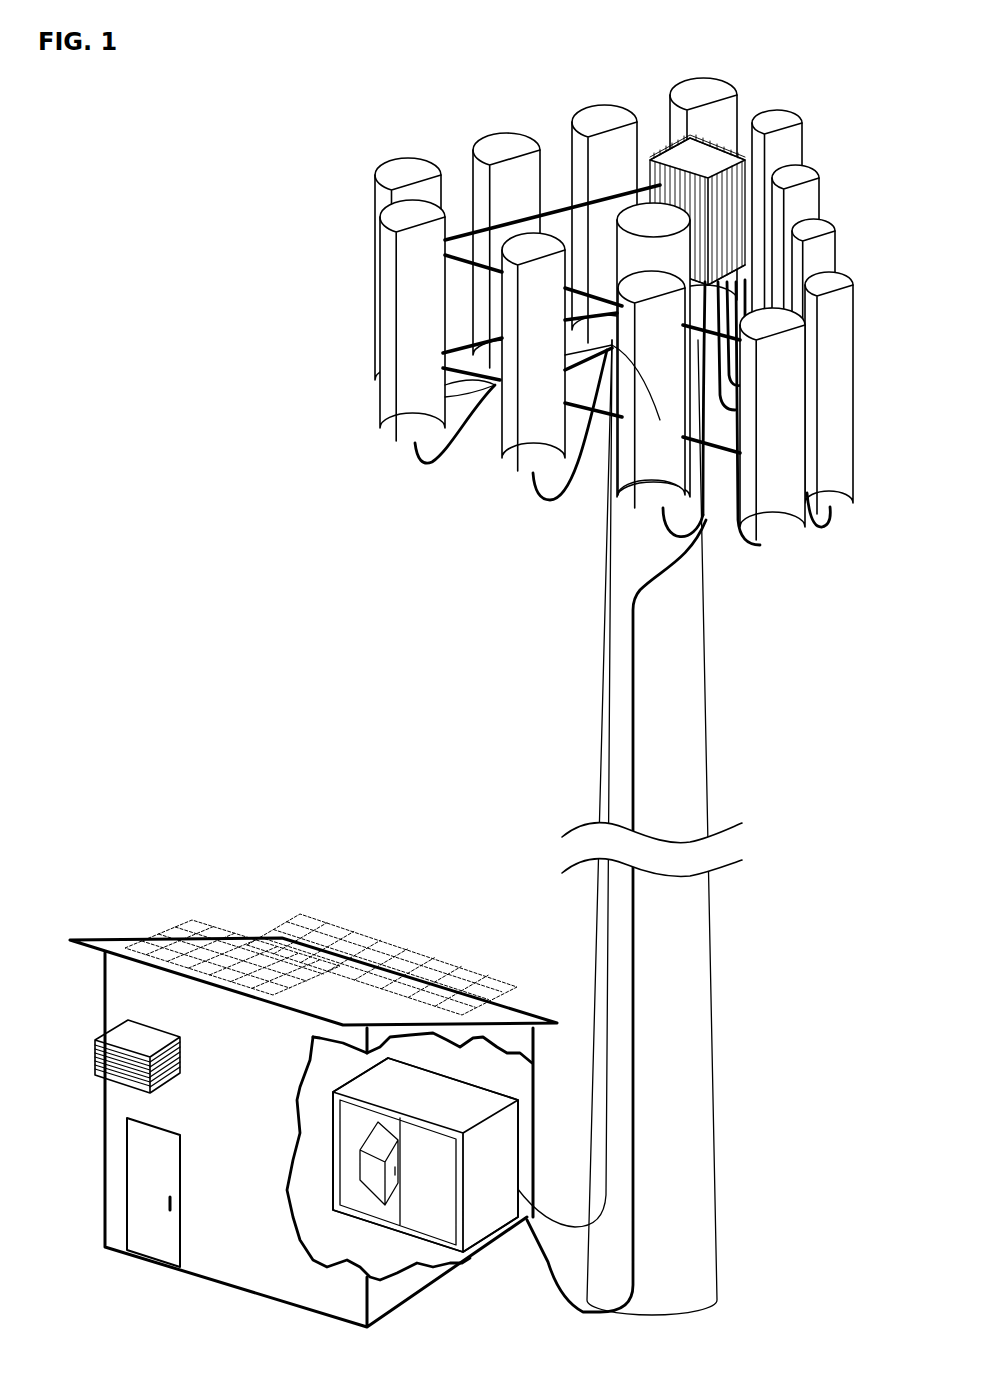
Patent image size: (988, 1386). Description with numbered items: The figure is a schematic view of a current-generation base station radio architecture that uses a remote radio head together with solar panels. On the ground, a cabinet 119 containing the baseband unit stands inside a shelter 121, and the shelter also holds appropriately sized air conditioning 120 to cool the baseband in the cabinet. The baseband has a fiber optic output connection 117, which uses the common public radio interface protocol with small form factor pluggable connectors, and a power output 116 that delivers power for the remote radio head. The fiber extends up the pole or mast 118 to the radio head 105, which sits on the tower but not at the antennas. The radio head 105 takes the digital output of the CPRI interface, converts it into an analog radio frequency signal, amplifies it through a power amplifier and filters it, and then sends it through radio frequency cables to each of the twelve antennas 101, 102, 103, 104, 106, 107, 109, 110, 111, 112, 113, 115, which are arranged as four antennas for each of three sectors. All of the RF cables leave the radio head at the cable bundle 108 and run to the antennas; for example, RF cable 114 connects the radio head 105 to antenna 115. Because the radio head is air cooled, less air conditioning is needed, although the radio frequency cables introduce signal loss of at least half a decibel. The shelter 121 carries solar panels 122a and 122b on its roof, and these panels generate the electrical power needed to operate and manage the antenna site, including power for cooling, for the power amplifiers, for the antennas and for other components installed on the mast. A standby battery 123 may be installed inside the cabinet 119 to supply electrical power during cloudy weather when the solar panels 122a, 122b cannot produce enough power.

The antenna 101 is at (415, 137).
The antenna 102 is at (510, 112).
The antenna 103 is at (608, 87).
The antenna 104 is at (710, 57).
The radio head 105 is at (708, 138).
The antenna 106 is at (793, 93).
The antenna 107 is at (802, 145).
The cable bundle 108 is at (742, 267).
The antenna 109 is at (830, 207).
The antenna 110 is at (845, 255).
The antenna 111 is at (792, 525).
The antenna 112 is at (618, 483).
The antenna 113 is at (510, 453).
The RF cable 114 is at (422, 450).
The antenna 115 is at (378, 413).
The power output 116 is at (635, 713).
The fiber optic output connection 117 is at (610, 787).
The pole or mast 118 is at (707, 797).
The cabinet 119 is at (343, 1127).
The air conditioning 120 is at (90, 1050).
The shelter 121 is at (102, 963).
The solar panel 122a is at (170, 922).
The solar panel 122b is at (280, 918).
The standby battery 123 is at (357, 1143).